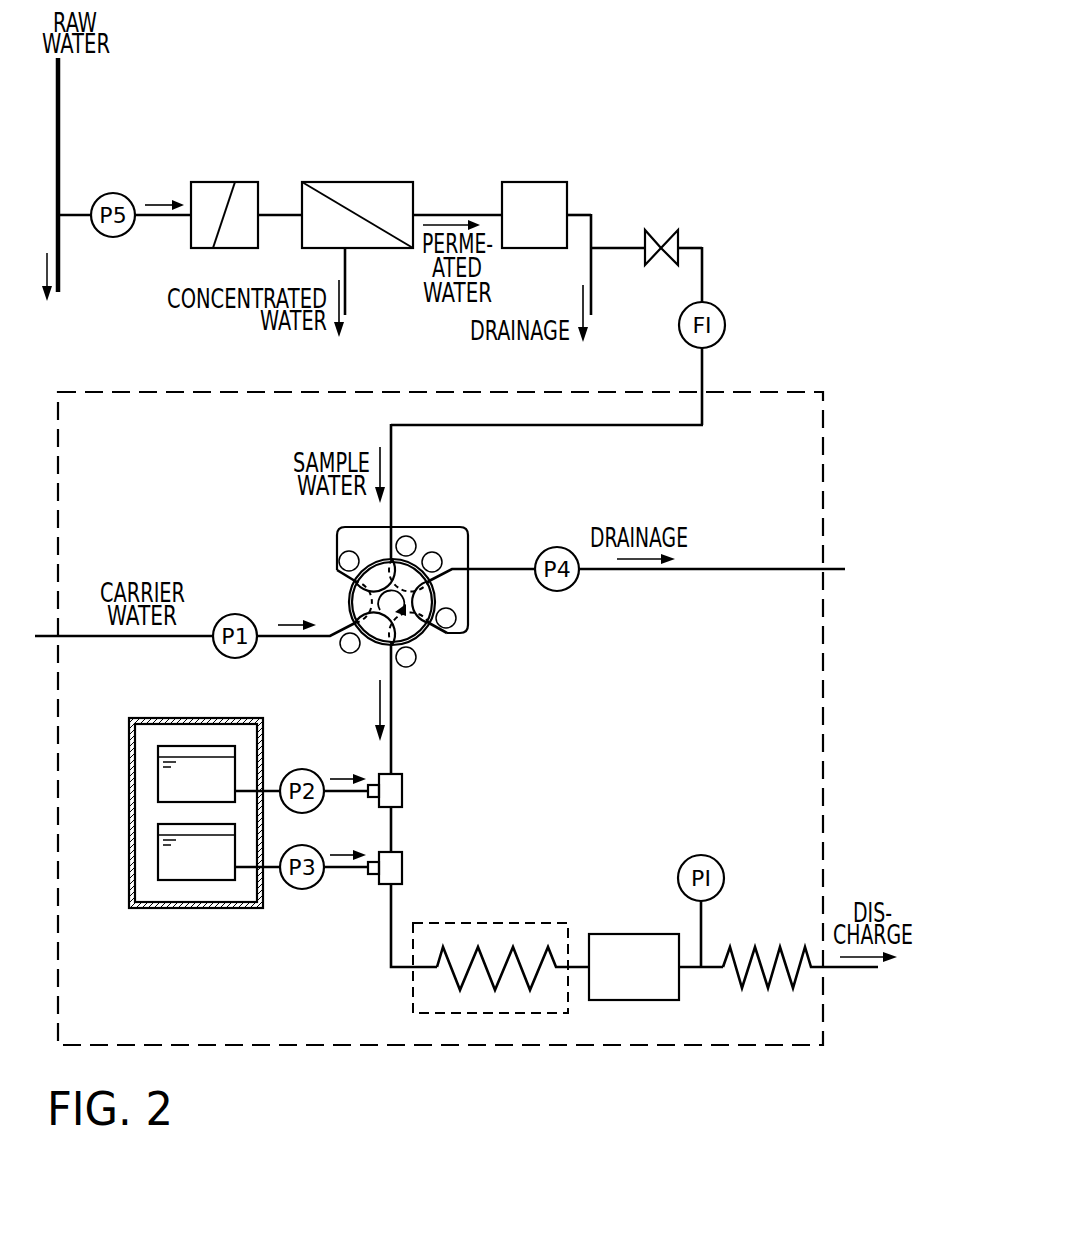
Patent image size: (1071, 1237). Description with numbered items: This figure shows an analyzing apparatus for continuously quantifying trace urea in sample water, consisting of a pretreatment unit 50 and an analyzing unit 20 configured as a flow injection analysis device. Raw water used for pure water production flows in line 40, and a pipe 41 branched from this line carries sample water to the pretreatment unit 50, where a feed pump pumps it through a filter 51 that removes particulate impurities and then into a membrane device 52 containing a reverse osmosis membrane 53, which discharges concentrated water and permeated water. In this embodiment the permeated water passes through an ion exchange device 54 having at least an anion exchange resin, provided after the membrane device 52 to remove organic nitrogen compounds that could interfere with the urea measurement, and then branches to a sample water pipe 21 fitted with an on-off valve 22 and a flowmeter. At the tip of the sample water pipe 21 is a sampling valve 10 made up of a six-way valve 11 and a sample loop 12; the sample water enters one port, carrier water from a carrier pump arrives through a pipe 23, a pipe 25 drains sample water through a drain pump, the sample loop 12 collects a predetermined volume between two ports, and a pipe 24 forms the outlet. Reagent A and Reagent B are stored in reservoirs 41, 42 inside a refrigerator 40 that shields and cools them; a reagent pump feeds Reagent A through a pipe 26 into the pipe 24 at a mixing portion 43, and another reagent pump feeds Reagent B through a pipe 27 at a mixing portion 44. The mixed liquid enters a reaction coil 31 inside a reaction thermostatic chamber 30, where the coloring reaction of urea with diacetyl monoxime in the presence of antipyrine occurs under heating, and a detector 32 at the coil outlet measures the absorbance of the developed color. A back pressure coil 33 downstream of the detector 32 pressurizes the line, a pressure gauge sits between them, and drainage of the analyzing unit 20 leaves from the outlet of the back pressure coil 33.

The sampling valve 10 is at (503, 503).
The six-way valve 11 is at (346, 602).
The sample loop 12 is at (446, 528).
The analyzing unit 20 is at (792, 388).
The sample water pipe 21 is at (620, 250).
The on-off valve 22 is at (656, 241).
The pipe 23 is at (292, 640).
The pipe 24 is at (392, 752).
The pipe 25 is at (600, 572).
The pipe 26 is at (343, 795).
The pipe 27 is at (345, 873).
The reaction thermostatic chamber 30 is at (548, 921).
The reaction coil 31 is at (452, 970).
The detector 32 is at (618, 933).
The back pressure coil 33 is at (766, 954).
The refrigerator 40 is at (58, 102).
The reservoir 41 is at (75, 217).
The reservoir 42 is at (158, 855).
The mixing portion 43 is at (402, 790).
The mixing portion 44 is at (402, 866).
The pretreatment unit 50 is at (97, 126).
The filter 51 is at (245, 188).
The membrane device 52 is at (407, 189).
The membrane 53 is at (374, 228).
The ion exchange device 54 is at (545, 189).